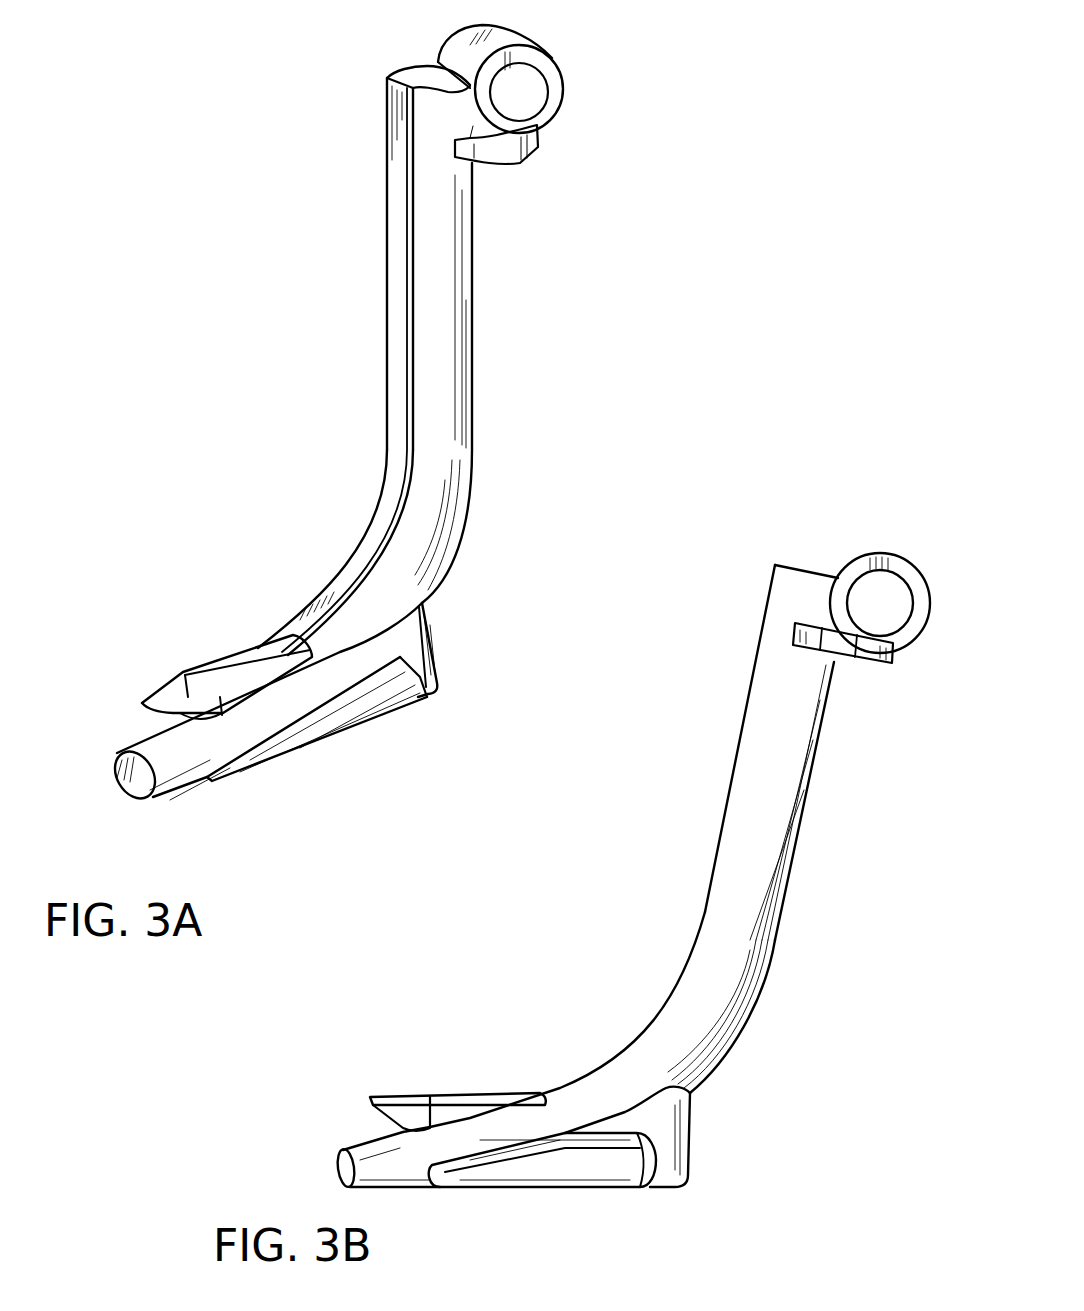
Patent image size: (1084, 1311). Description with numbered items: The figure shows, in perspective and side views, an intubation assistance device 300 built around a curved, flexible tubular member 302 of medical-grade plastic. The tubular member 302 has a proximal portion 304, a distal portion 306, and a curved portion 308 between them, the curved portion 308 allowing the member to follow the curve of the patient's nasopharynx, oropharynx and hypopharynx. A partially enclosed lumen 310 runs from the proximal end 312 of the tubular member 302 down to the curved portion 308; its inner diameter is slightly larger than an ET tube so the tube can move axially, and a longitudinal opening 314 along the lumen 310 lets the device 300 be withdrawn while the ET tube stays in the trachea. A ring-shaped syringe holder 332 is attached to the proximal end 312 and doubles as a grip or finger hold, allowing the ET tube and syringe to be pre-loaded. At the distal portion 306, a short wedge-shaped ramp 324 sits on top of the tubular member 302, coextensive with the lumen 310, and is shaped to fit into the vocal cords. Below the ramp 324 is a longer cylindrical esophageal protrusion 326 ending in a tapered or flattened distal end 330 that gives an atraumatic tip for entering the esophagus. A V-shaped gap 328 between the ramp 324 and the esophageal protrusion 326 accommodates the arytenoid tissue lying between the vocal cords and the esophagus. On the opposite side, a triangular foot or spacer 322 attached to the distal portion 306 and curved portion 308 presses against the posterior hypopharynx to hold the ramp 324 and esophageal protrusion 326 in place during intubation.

In FIG. 3A, the intubation assistance device 300 is at (293, 141).
In FIG. 3B, the intubation assistance device 300 is at (689, 734).
In FIG. 3A, the tubular member 302 is at (462, 368).
In FIG. 3B, the tubular member 302 is at (712, 858).
In FIG. 3A, the proximal portion 304 is at (519, 274).
In FIG. 3B, the proximal portion 304 is at (839, 771).
In FIG. 3A, the distal portion 306 is at (238, 796).
In FIG. 3B, the distal portion 306 is at (480, 1203).
In FIG. 3A, the curved portion 308 is at (483, 554).
In FIG. 3B, the curved portion 308 is at (780, 1029).
In FIG. 3A, the lumen 310 is at (400, 290).
In FIG. 3A, the proximal end 312 is at (396, 76).
In FIG. 3B, the proximal end 312 is at (810, 568).
In FIG. 3A, the longitudinal opening 314 is at (408, 222).
In FIG. 3A, the spacer 322 is at (365, 690).
In FIG. 3B, the spacer 322 is at (688, 1148).
In FIG. 3A, the ramp 324 is at (168, 690).
In FIG. 3B, the ramp 324 is at (400, 1099).
In FIG. 3A, the esophageal protrusion 326 is at (170, 762).
In FIG. 3B, the esophageal protrusion 326 is at (345, 1146).
In FIG. 3A, the gap 328 is at (130, 713).
In FIG. 3B, the gap 328 is at (364, 1112).
In FIG. 3A, the distal end 330 is at (118, 777).
In FIG. 3B, the distal end 330 is at (335, 1178).
In FIG. 3A, the syringe holder 332 is at (503, 40).
In FIG. 3B, the syringe holder 332 is at (890, 558).